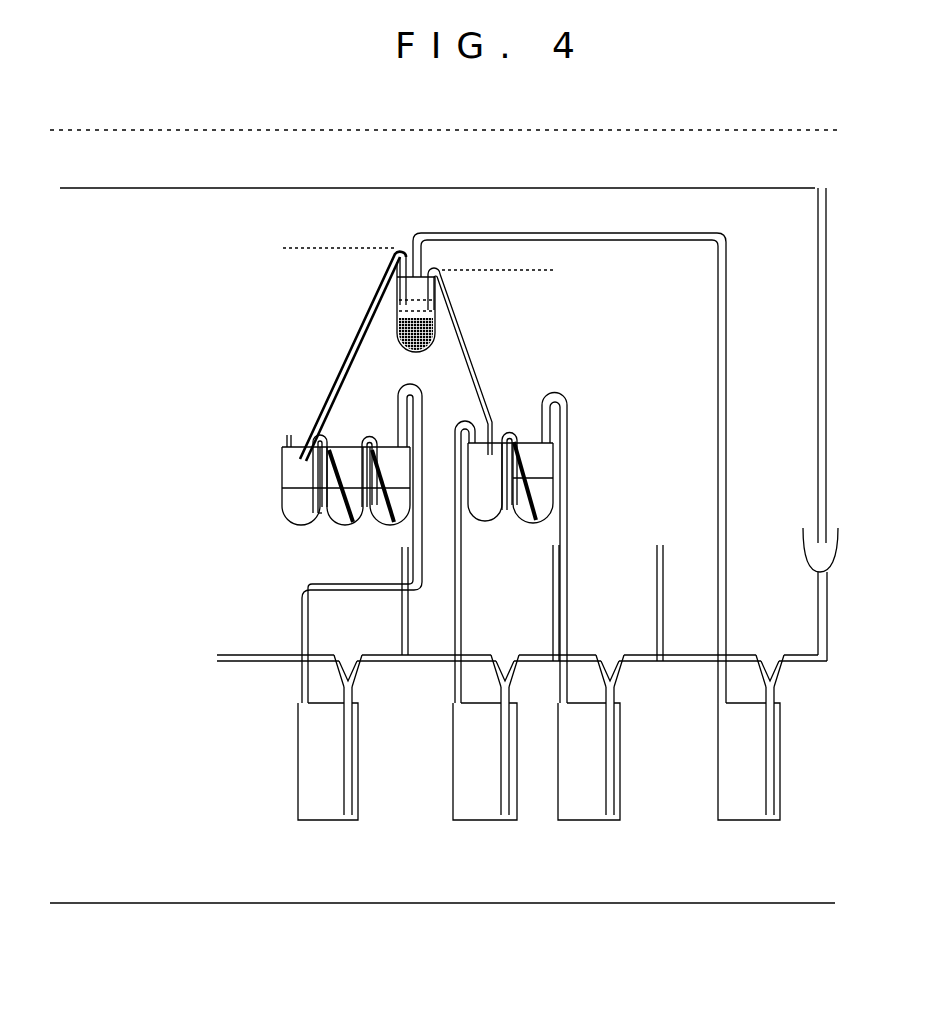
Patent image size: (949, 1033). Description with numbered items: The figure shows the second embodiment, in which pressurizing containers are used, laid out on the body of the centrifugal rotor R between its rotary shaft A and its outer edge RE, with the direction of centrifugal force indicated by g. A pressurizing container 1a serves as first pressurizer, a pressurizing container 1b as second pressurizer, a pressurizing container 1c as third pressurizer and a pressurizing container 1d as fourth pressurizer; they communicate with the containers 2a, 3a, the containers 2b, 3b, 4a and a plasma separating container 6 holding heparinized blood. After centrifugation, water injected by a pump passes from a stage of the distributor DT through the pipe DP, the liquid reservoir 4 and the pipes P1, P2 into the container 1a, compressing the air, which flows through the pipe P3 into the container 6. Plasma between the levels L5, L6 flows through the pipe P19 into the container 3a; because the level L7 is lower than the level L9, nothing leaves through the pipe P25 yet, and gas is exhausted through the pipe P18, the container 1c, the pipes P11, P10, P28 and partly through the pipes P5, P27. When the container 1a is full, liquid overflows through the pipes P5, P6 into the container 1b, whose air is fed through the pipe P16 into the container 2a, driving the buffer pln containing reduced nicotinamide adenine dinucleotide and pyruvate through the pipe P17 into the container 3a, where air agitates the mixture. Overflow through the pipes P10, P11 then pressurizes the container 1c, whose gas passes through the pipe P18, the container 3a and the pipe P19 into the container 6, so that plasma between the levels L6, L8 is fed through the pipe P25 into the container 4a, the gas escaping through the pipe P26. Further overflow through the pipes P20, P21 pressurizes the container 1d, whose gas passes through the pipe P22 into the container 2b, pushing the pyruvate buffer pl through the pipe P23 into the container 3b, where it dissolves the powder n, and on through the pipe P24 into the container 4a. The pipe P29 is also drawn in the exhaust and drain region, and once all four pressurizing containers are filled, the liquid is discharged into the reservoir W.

The rotary shaft A is at (852, 130).
The distributor DT is at (852, 189).
The outer edge RE is at (852, 903).
The pipe DP is at (830, 414).
The liquid reservoir 4 is at (842, 553).
The pipe P1 is at (800, 663).
The pipe P3 is at (730, 306).
The plasma separating container 6 is at (395, 248).
The level L6 is at (394, 302).
The pipe P25 is at (350, 323).
The level L9 is at (282, 246).
The level L5 is at (440, 273).
The level L8 is at (438, 311).
The pipe P19 is at (460, 324).
The level L7 is at (557, 270).
The container 4a is at (301, 528).
The container 3b is at (345, 530).
The container 2b is at (387, 528).
The pyrophosphate buffer pl is at (378, 488).
The pipe P26 is at (285, 435).
The pipe P24 is at (312, 434).
The pipe P23 is at (361, 434).
The reduced nicotinamide adenine dinucleotide powder n is at (342, 514).
The pipe P22 is at (398, 392).
The pipe P29 is at (410, 628).
The pipe P18 is at (458, 422).
The container 3a is at (486, 526).
The container 2a is at (532, 526).
The pyrophosphate buffer pln is at (543, 496).
The pipe P17 is at (512, 432).
The pipe P16 is at (566, 393).
The pipe P28 is at (562, 618).
The pipe P27 is at (665, 612).
The centrifugal rotor R is at (694, 405).
The pipe P20 is at (388, 663).
The pipe P10 is at (530, 663).
The pipe P5 is at (643, 663).
The reservoir W is at (213, 663).
The gravity direction g is at (75, 665).
The pressurizing container 1d is at (328, 823).
The pipe P21 is at (356, 762).
The pressurizing container 1c is at (487, 823).
The pipe P11 is at (510, 763).
The pressurizing container 1b is at (590, 823).
The pipe P6 is at (618, 768).
The pressurizing container 1a is at (750, 823).
The pipe P2 is at (778, 768).